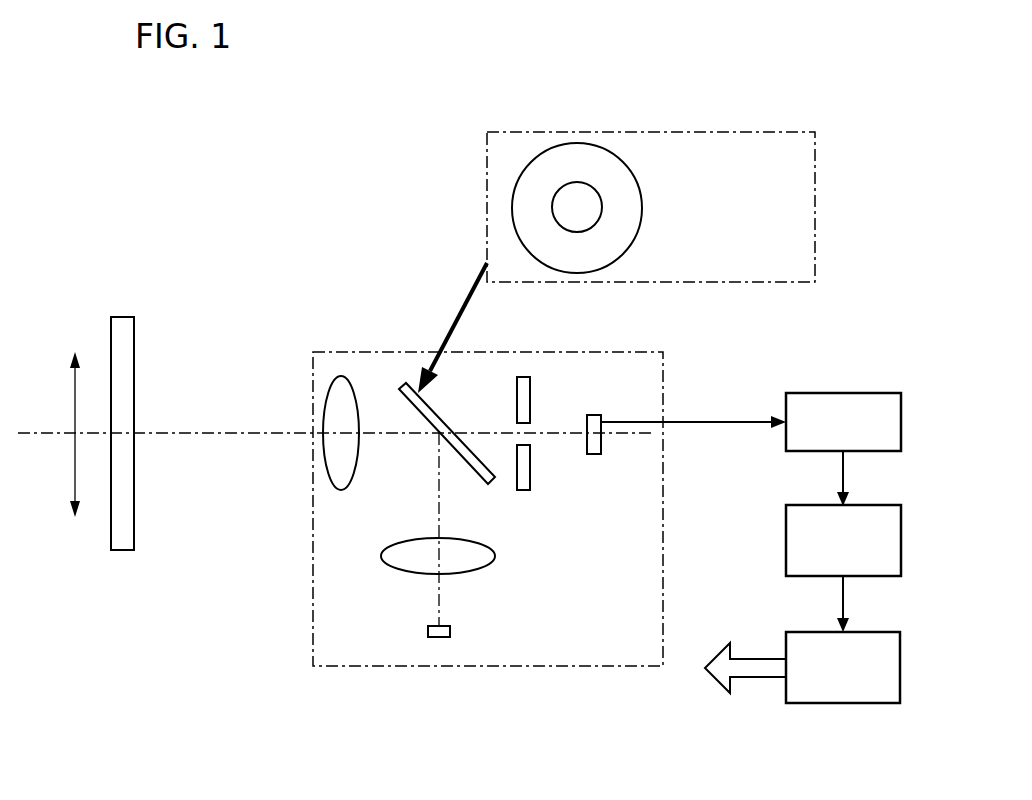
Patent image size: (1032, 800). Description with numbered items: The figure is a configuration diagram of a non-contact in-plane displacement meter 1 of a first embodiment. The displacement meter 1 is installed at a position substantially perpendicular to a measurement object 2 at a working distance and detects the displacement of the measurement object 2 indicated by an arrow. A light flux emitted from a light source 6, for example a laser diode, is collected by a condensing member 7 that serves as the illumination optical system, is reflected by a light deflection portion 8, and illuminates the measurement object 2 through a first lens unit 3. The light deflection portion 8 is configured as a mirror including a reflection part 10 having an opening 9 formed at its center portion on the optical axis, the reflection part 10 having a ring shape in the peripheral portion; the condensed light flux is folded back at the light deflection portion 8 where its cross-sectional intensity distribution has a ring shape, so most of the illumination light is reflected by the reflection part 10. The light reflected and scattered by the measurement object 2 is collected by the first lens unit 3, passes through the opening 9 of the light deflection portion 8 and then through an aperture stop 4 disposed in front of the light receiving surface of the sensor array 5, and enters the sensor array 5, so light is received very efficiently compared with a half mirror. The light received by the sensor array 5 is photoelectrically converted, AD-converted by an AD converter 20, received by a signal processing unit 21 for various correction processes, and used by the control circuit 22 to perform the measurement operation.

The displacement meter 1 is at (663, 485).
The measurement object 2 is at (111, 335).
The first lens unit 3 is at (346, 378).
The aperture stop 4 is at (523, 377).
The sensor array 5 is at (593, 415).
The light source 6 is at (450, 630).
The condensing member 7 is at (496, 556).
The light deflection portion 8 is at (412, 387).
The opening 9 is at (583, 205).
The reflection part 10 is at (617, 220).
The AD converter 20 is at (873, 393).
The signal processing unit 21 is at (873, 505).
The control circuit 22 is at (873, 632).